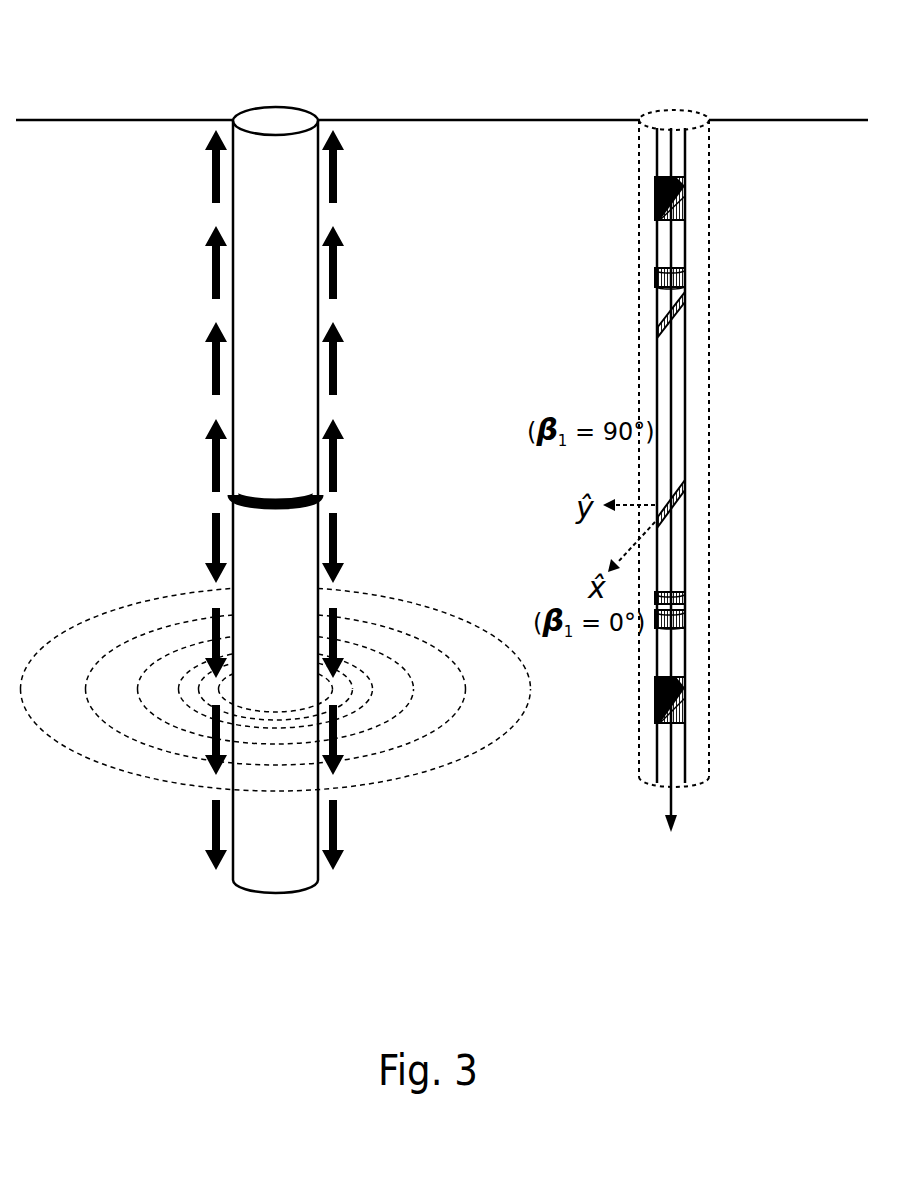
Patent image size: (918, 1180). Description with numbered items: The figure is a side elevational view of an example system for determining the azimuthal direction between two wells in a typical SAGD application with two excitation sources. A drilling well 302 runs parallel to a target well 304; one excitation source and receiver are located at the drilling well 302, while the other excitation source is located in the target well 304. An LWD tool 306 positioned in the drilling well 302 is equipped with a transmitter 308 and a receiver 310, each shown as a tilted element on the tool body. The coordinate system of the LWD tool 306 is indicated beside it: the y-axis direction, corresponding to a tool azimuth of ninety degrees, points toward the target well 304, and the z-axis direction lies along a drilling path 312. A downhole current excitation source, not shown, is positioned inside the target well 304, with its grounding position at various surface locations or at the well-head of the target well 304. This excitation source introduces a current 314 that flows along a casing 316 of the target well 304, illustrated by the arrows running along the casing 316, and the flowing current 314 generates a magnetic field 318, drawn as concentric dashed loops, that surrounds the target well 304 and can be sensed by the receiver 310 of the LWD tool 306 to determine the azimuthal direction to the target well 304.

The drilling well 302 is at (672, 118).
The target well 304 is at (274, 118).
The LWD tool 306 is at (698, 375).
The transmitter 308 is at (656, 330).
The receiver 310 is at (680, 492).
The drilling path 312 is at (682, 866).
The current 314 is at (214, 424).
The casing 316 is at (318, 881).
The magnetic field 318 is at (148, 597).